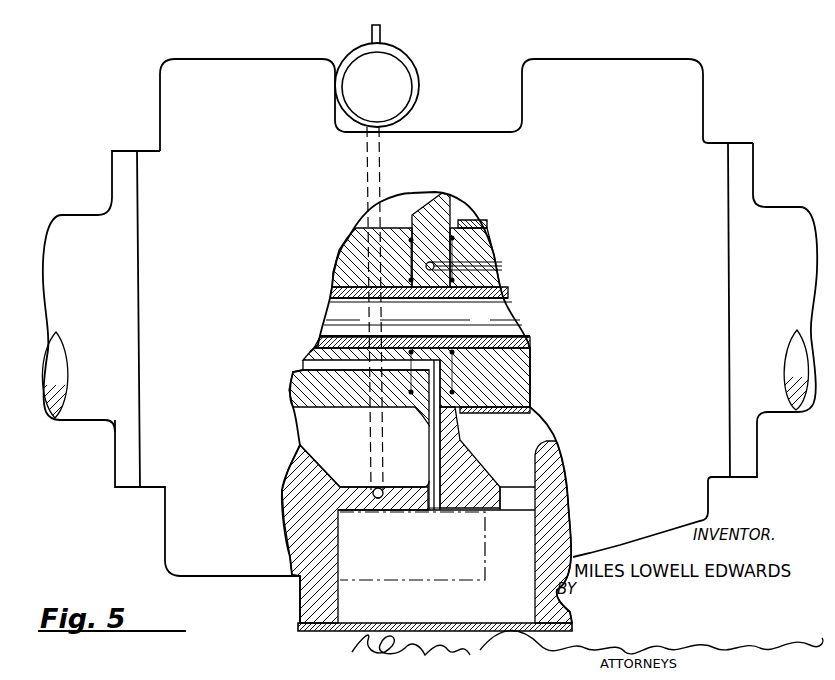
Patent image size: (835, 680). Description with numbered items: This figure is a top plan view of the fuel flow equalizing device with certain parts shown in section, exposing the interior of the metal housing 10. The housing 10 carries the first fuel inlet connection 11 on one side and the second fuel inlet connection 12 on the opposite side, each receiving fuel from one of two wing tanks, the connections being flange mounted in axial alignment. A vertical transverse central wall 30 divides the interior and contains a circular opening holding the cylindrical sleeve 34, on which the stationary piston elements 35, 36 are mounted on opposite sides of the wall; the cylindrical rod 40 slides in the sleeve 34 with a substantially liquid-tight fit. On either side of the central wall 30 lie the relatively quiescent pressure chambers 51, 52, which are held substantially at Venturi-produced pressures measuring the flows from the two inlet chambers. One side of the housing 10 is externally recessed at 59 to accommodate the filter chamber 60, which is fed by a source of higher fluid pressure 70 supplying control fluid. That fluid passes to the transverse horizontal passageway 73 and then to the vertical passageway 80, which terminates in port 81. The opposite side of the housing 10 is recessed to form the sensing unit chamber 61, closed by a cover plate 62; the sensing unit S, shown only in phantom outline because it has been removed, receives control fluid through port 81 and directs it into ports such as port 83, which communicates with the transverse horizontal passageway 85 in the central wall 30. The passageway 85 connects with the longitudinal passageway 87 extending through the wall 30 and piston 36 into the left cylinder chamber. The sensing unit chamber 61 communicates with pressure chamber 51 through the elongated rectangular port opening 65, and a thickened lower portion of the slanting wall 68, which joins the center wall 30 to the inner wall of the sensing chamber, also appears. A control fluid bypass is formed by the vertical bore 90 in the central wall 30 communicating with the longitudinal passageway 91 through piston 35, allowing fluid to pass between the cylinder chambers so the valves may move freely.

The housing 10 is at (597, 68).
The first fuel inlet connection 11 is at (781, 215).
The second fuel inlet connection 12 is at (90, 222).
The external recess 59 is at (457, 82).
The filter chamber 60 is at (398, 46).
The source of fluid pressure 70 is at (372, 40).
The transverse horizontal passageway 73 is at (372, 182).
The central wall 30 is at (440, 196).
The stationary piston element 36 is at (348, 268).
The vertical bore 90 is at (431, 262).
The longitudinal passageway 91 is at (502, 268).
The cylindrical sleeve 34 is at (510, 292).
The cylindrical rod 40 is at (520, 313).
The stationary piston element 35 is at (520, 374).
The longitudinal passageway 87 is at (305, 367).
The pressure chamber 52 is at (354, 429).
The transverse horizontal passageway 85 is at (432, 450).
The vertical passageway 80 is at (375, 490).
The slanting wall 68 is at (462, 442).
The pressure chamber 51 is at (540, 456).
The port opening 65 is at (512, 503).
The port 81 is at (378, 500).
The port 83 is at (436, 500).
The sensing unit S is at (482, 560).
The sensing unit chamber 61 is at (522, 607).
The cover plate 62 is at (302, 626).